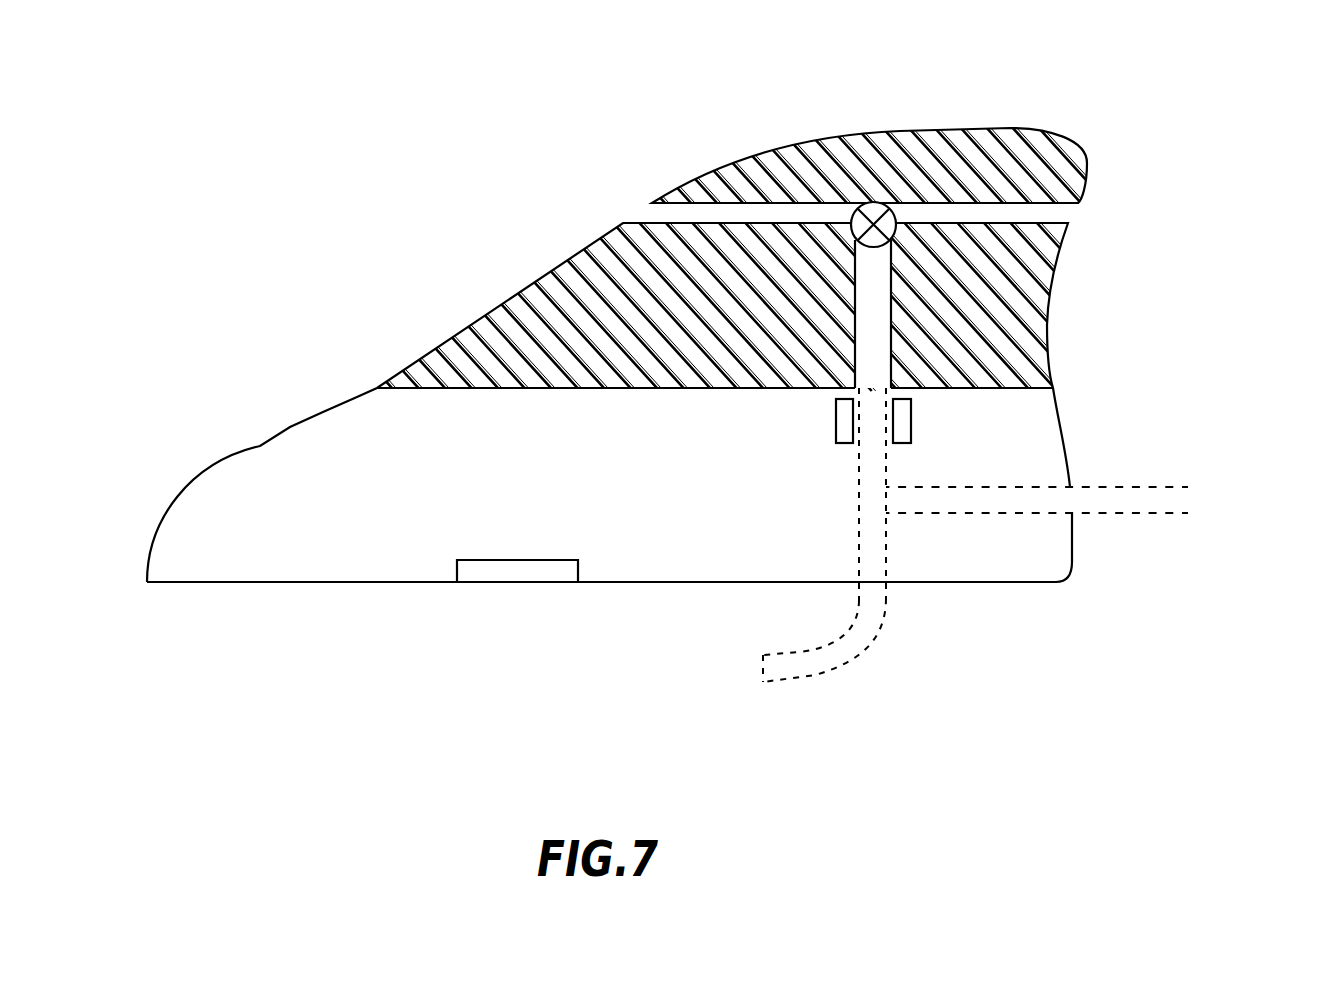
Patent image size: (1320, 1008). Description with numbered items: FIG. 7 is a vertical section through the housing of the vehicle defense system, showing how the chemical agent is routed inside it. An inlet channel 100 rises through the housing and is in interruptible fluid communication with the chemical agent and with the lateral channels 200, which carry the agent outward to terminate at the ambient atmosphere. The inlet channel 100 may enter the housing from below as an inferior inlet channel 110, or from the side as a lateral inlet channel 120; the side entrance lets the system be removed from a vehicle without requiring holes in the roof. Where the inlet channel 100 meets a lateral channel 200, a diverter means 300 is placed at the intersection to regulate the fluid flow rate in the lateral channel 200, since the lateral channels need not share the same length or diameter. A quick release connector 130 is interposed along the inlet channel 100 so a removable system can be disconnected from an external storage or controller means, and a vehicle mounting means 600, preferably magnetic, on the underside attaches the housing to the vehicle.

The inlet channel 100 is at (887, 468).
The inferior inlet channel 110 is at (798, 678).
The lateral inlet channel 120 is at (1138, 487).
The quick release connector 130 is at (911, 421).
The lateral channel 200 is at (1078, 212).
The diverter means 300 is at (862, 203).
The vehicle mounting means 600 is at (516, 582).